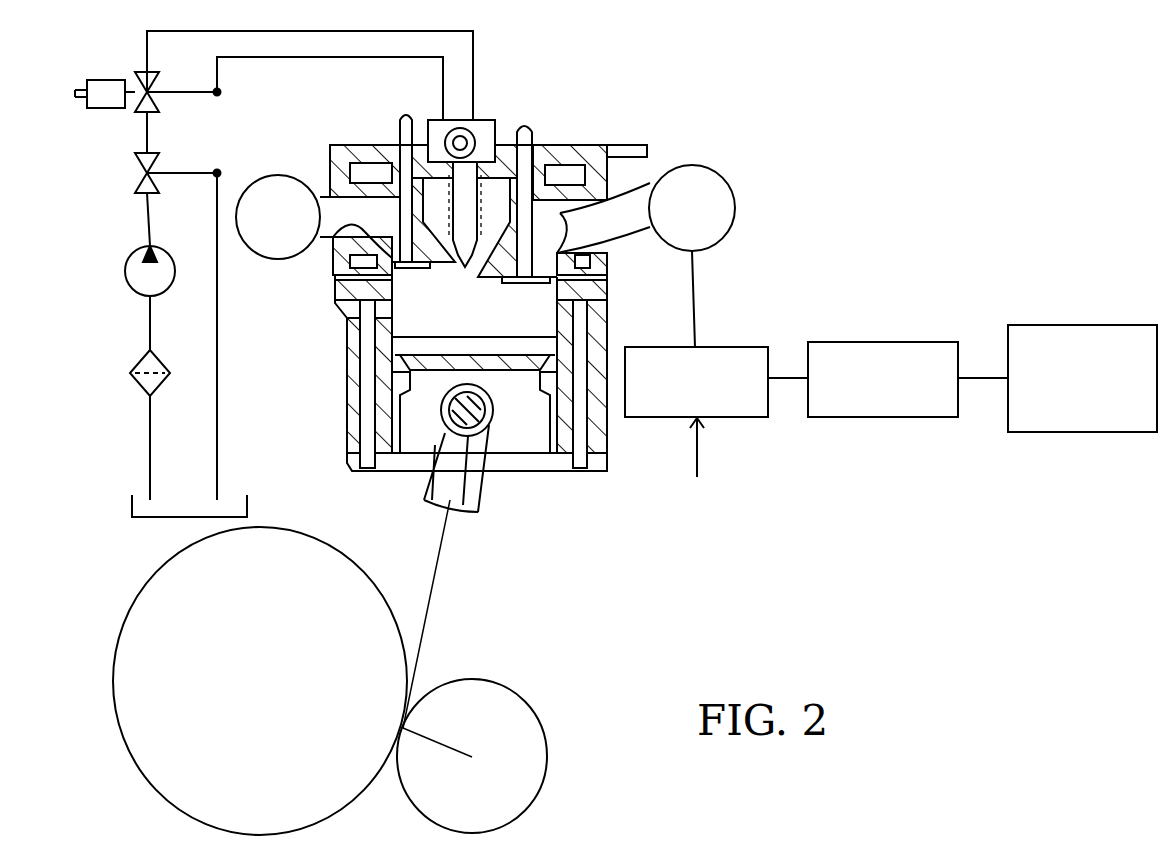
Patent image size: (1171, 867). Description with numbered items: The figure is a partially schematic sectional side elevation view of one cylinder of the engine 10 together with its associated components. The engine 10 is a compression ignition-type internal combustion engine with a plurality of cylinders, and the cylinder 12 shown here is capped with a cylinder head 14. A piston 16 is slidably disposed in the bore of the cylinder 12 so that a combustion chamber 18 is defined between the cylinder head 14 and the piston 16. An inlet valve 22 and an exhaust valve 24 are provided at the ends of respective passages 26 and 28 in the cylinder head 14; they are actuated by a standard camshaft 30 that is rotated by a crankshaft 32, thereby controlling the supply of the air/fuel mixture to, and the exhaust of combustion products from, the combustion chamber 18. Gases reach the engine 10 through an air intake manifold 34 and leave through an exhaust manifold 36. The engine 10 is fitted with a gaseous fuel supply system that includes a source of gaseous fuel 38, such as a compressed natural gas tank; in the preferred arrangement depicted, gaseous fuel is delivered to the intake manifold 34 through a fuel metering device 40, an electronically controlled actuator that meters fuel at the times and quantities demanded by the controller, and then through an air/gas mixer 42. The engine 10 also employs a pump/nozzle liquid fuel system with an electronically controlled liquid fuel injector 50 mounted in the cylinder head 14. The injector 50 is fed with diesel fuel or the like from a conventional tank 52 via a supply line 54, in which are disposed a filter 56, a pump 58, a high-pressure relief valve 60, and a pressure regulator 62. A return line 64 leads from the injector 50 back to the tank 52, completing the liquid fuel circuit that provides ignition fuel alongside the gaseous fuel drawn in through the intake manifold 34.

The engine 10 is at (950, 152).
The cylinder 12 is at (614, 329).
The cylinder head 14 is at (585, 142).
The piston 16 is at (402, 347).
The combustion chamber 18 is at (482, 302).
The inlet valve 22 is at (528, 142).
The exhaust valve 24 is at (396, 137).
The passage 26 is at (647, 187).
The passage 28 is at (332, 240).
The camshaft 30 is at (505, 685).
The crankshaft 32 is at (363, 568).
The air intake manifold 34 is at (724, 195).
The exhaust manifold 36 is at (278, 175).
The source of gaseous fuel 38 is at (1135, 295).
The fuel metering device 40 is at (930, 342).
The air/gas mixer 42 is at (725, 347).
The liquid fuel injector 50 is at (483, 155).
The tank 52 is at (132, 507).
The supply line 54 is at (150, 313).
The filter 56 is at (133, 373).
The pump 58 is at (125, 270).
The high-pressure relief valve 60 is at (140, 173).
The pressure regulator 62 is at (140, 82).
The return line 64 is at (290, 66).